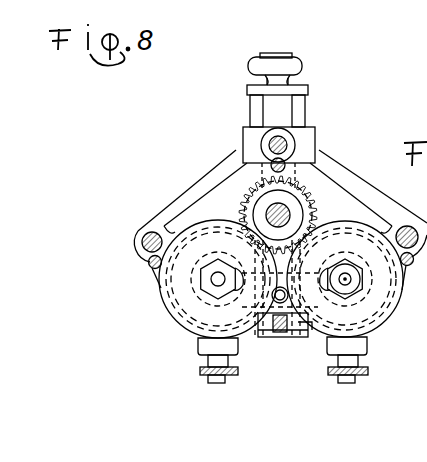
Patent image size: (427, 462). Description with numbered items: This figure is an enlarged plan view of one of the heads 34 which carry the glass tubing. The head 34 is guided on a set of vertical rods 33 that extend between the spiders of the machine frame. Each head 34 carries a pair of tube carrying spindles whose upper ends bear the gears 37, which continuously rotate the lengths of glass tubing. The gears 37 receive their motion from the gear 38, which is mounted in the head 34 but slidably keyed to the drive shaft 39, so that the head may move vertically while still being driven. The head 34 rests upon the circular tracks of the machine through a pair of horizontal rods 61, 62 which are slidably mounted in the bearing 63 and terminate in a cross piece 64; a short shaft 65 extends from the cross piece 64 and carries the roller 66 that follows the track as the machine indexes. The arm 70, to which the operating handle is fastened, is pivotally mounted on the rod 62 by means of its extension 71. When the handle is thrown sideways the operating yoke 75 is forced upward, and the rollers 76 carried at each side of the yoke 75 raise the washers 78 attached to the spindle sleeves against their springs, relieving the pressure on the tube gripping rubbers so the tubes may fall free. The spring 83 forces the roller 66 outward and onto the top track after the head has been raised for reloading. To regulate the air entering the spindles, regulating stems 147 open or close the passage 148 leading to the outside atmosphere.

The roller 66 is at (294, 63).
The short shaft 65 is at (251, 72).
The cross piece 64 is at (305, 85).
The horizontal rod 61 is at (248, 105).
The horizontal rod 62 is at (300, 112).
The bearing 63 is at (307, 140).
The vertical rods 33 is at (274, 143).
The head 34 is at (183, 197).
The gear 38 is at (348, 177).
The drive shaft 39 is at (268, 212).
The spring 83 is at (321, 213).
The washers 78 is at (365, 258).
The rollers 76 is at (326, 266).
The operating yoke 75 is at (254, 340).
The arm 70 is at (280, 337).
The extension 71 is at (310, 337).
The gears 37 is at (174, 335).
The regulating stems 147 is at (205, 377).
The passage 148 is at (227, 382).